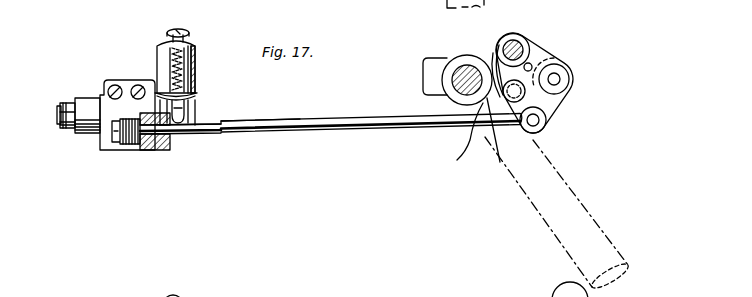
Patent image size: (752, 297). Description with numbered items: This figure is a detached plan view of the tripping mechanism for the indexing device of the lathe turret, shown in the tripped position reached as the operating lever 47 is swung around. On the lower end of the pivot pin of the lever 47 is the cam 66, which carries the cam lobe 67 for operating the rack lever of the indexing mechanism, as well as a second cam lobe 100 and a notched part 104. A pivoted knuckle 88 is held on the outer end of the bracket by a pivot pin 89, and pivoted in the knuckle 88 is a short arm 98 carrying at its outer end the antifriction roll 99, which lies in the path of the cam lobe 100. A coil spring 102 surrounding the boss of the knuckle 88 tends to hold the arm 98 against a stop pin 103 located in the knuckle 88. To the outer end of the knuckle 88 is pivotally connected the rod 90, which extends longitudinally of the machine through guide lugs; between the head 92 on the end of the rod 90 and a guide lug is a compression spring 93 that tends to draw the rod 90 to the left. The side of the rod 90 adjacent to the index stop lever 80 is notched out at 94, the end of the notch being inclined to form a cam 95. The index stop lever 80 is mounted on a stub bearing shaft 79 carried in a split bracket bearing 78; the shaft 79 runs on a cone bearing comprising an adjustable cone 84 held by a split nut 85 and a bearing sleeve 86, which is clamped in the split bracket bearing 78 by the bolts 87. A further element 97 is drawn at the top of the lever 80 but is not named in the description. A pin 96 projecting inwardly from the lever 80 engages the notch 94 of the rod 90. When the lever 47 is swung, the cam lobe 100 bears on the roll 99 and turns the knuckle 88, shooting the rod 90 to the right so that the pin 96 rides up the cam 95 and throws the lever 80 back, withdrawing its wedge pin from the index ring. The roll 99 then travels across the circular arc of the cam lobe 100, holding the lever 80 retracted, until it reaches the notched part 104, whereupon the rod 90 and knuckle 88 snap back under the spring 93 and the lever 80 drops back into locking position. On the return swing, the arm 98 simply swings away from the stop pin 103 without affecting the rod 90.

The lever 47 is at (590, 222).
The cam 66 is at (473, 56).
The cam lobe 67 is at (424, 78).
The split bracket bearing 78 is at (110, 81).
The stub bearing shaft 79 is at (60, 117).
The index stop lever 80 is at (197, 64).
The adjustable cone 84 is at (65, 101).
The split nut 85 is at (60, 129).
The bearing sleeve 86 is at (78, 100).
The bolts 87 is at (137, 84).
The knuckle 88 is at (540, 54).
The pivot pin 89 is at (528, 44).
The rod 90 is at (306, 133).
The head 92 is at (115, 131).
The compression spring 93 is at (125, 142).
The notch 94 is at (222, 121).
The cam 95 is at (187, 128).
The pin 96 is at (188, 116).
The adjusting screw 97 is at (181, 30).
The arm 98 is at (548, 104).
The antifriction roll 99 is at (497, 40).
The cam lobe 100 is at (493, 139).
The coil spring 102 is at (571, 82).
The stop pin 103 is at (548, 58).
The notched part 104 is at (460, 140).